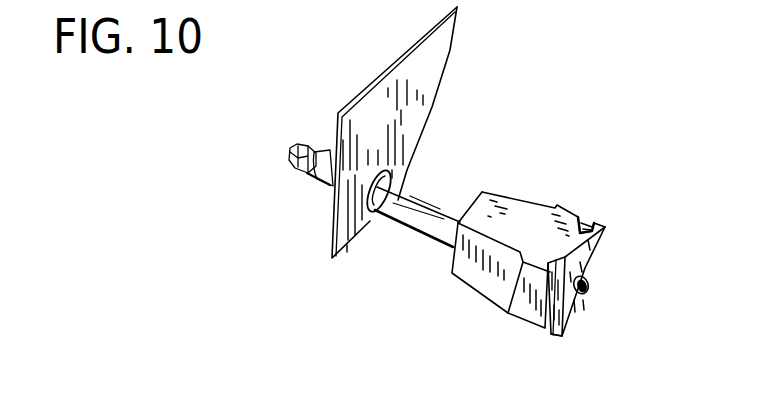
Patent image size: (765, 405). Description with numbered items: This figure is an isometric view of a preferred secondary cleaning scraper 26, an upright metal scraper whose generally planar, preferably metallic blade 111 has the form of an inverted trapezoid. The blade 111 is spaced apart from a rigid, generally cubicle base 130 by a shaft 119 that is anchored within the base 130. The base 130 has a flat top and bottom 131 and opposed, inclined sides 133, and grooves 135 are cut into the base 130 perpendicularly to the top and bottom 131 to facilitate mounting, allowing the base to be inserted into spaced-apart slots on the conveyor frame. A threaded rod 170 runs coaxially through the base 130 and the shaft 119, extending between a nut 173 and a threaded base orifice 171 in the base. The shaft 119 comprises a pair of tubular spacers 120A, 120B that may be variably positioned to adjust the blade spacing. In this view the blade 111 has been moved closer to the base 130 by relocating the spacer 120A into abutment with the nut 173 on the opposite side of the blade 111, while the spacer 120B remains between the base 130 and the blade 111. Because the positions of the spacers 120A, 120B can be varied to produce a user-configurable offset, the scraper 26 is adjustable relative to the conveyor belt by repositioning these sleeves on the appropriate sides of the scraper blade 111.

The scraper 26 is at (515, 82).
The blade 111 is at (401, 59).
The shaft 119 is at (399, 227).
The tubular spacer 120A is at (310, 180).
The tubular spacer 120B is at (414, 205).
The base 130 is at (544, 271).
The top and bottom 131 is at (514, 199).
The inclined sides 133 is at (490, 283).
The grooves 135 is at (590, 224).
The threaded rod 170 is at (291, 149).
The threaded base orifice 171 is at (585, 293).
The nut 173 is at (297, 170).